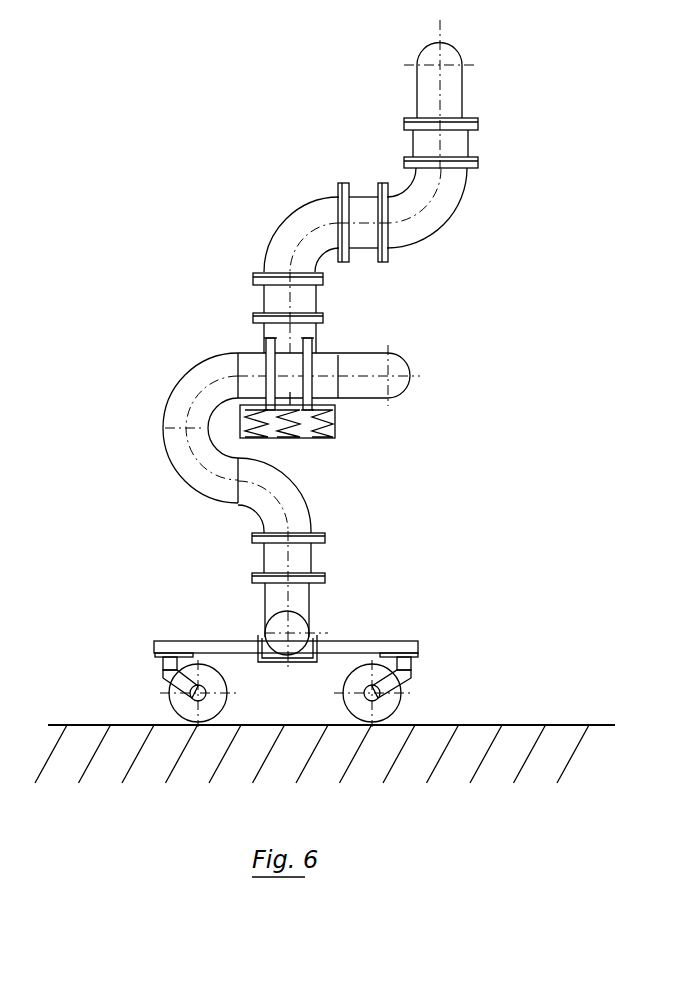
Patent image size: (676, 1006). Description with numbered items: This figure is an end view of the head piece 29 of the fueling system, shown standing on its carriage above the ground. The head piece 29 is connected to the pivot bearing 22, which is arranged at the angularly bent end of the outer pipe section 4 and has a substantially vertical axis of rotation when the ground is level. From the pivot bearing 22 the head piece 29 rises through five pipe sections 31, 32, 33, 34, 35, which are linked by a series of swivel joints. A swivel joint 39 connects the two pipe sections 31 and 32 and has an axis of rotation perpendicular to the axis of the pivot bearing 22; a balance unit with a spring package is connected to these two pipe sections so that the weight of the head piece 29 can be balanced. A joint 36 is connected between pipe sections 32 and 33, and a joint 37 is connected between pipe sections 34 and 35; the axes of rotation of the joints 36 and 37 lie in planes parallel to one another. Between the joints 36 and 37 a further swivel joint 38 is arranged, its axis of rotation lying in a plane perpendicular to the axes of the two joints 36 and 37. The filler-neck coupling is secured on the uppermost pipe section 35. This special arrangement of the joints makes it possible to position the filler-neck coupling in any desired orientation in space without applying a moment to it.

The outer pipe section 4 is at (310, 628).
The pivot bearing 22 is at (307, 567).
The head piece 29 is at (315, 333).
The pipe section 31 is at (300, 508).
The pipe section 32 is at (377, 388).
The pipe section 33 is at (282, 245).
The pipe section 34 is at (440, 210).
The pipe section 35 is at (453, 98).
The joint 36 is at (273, 307).
The joint 37 is at (460, 148).
The swivel joint 38 is at (362, 202).
The swivel joint 39 is at (300, 367).